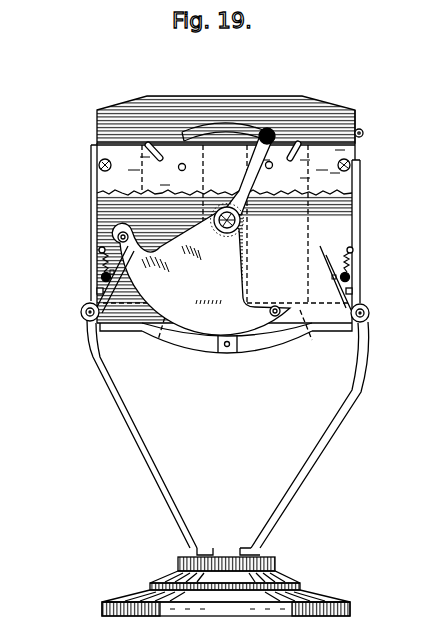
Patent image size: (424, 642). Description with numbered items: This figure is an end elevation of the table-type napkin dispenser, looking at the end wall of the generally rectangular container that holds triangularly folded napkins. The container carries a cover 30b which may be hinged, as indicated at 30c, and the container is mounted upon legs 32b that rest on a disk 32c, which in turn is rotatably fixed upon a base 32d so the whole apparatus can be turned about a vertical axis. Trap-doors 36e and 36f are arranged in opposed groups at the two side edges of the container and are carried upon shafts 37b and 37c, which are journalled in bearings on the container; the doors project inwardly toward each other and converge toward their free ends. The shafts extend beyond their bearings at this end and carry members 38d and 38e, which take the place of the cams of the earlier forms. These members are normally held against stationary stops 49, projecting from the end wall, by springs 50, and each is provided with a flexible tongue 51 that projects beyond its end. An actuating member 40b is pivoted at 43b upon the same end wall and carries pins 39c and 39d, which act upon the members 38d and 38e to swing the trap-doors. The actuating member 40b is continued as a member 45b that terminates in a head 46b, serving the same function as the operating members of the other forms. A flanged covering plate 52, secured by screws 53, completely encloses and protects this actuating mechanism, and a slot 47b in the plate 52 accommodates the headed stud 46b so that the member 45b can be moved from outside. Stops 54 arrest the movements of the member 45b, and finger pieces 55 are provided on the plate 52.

The cover 30b is at (200, 97).
The hinge 30c is at (364, 133).
The legs 32b is at (133, 440).
The disk 32c is at (182, 562).
The base 32d is at (313, 592).
The trap-doors 36e is at (184, 337).
The trap-doors 36f is at (307, 326).
The shaft 37b is at (82, 322).
The shaft 37c is at (370, 320).
The member 38d is at (99, 292).
The member 38e is at (352, 291).
The pin 39c is at (121, 233).
The pin 39d is at (276, 316).
The actuating member 40b is at (215, 326).
The pivot 43b is at (238, 229).
The member 45b is at (246, 176).
The head 46b is at (271, 130).
The slot 47b is at (234, 127).
The stationary stops 49 is at (101, 274).
The springs 50 is at (100, 248).
The flexible tongues 51 is at (121, 248).
The flanged covering plate 52 is at (361, 130).
The screws 53 is at (351, 166).
The stops 54 is at (178, 168).
The finger pieces 55 is at (150, 141).